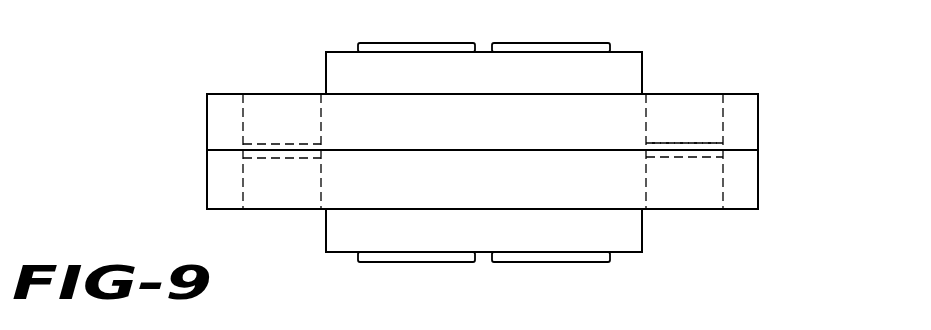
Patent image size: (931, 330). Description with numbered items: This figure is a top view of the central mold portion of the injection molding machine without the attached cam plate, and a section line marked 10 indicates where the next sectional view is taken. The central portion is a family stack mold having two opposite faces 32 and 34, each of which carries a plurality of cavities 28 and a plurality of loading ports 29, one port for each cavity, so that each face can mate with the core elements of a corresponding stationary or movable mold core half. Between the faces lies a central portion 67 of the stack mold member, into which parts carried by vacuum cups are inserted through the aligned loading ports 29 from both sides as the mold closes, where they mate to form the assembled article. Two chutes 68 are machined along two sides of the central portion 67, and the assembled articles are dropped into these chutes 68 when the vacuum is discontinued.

The cavities 28 is at (540, 43).
The loading ports 29 is at (279, 193).
The face 32 is at (630, 51).
The face 34 is at (640, 252).
The central portion 67 is at (688, 134).
The chutes 68 is at (267, 153).
The section line 10- 10 is at (200, 151).